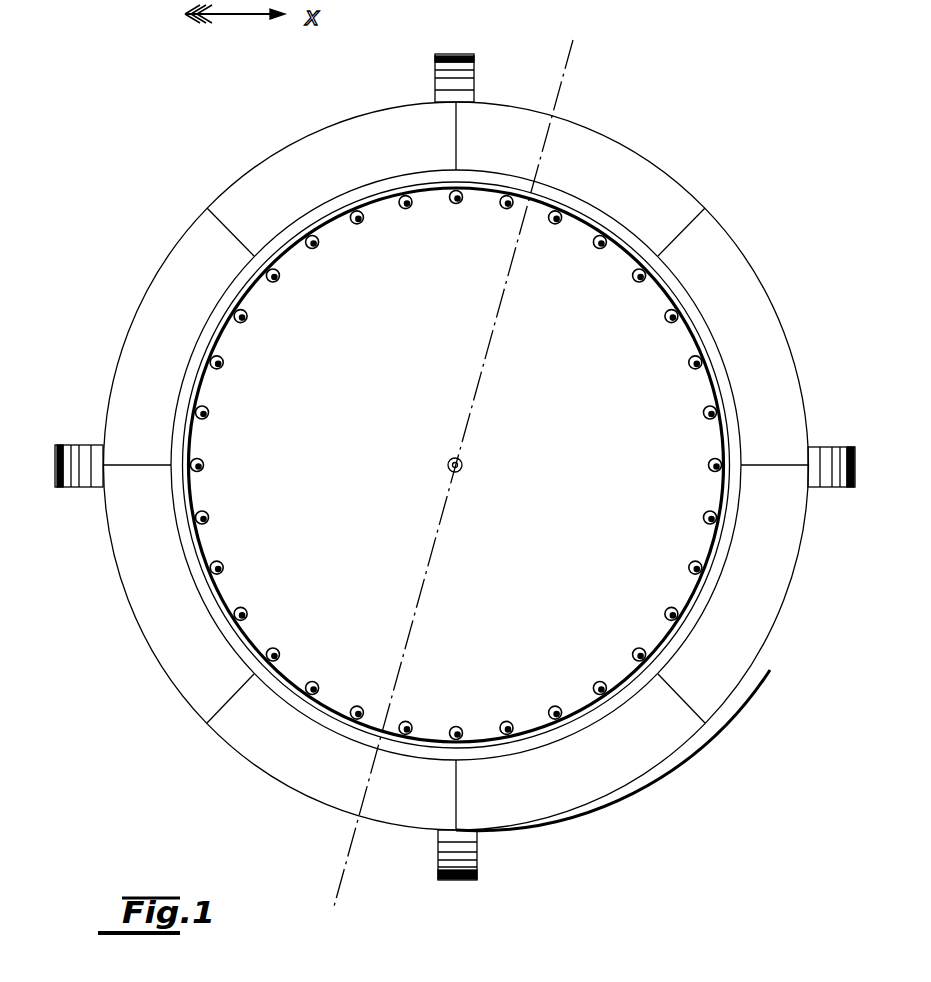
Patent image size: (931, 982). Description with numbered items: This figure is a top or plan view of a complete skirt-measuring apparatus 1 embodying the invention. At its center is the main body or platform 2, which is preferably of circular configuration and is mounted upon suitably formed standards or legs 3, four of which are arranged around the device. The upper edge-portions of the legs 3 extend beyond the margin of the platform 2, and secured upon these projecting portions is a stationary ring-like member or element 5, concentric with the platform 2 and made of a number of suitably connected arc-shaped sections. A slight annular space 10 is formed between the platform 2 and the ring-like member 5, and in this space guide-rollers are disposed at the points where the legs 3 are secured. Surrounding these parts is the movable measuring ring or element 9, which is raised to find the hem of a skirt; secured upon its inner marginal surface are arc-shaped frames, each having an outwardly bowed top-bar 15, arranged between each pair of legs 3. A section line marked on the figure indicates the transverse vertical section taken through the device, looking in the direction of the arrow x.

The skirt-measuring apparatus 1 is at (456, 462).
The main body or platform 2 is at (643, 300).
The standards or legs 3 is at (445, 66).
The ring-like member or element 5 is at (465, 482).
The movable measuring ring or element 9 is at (230, 187).
The annular space 10 is at (283, 253).
The top-bar 15 is at (327, 207).